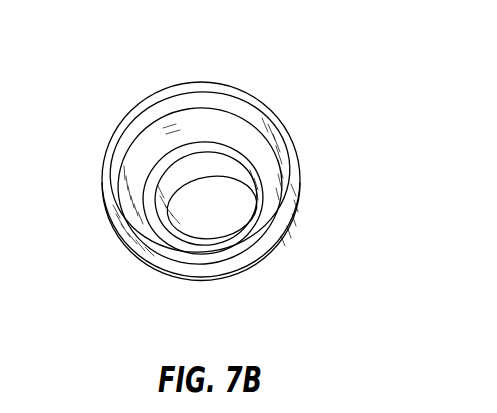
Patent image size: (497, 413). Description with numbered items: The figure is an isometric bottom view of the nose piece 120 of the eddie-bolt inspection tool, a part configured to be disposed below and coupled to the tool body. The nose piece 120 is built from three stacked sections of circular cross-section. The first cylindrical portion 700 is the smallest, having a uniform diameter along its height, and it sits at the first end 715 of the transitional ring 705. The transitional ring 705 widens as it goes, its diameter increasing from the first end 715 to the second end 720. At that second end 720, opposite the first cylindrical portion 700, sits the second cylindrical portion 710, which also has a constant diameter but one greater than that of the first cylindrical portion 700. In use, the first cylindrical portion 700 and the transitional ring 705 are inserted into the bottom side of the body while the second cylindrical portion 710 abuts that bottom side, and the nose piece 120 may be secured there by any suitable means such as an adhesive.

The nose piece 120 is at (150, 300).
The first cylindrical portion 700 is at (193, 160).
The transitional ring 705 is at (172, 135).
The second cylindrical portion 710 is at (103, 182).
The first end 715 is at (253, 150).
The second end 720 is at (140, 137).